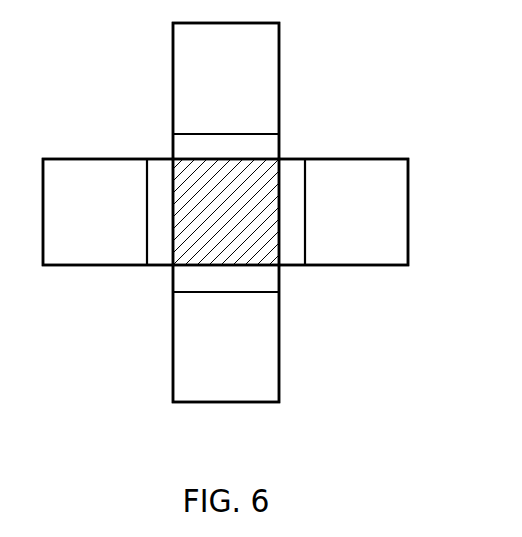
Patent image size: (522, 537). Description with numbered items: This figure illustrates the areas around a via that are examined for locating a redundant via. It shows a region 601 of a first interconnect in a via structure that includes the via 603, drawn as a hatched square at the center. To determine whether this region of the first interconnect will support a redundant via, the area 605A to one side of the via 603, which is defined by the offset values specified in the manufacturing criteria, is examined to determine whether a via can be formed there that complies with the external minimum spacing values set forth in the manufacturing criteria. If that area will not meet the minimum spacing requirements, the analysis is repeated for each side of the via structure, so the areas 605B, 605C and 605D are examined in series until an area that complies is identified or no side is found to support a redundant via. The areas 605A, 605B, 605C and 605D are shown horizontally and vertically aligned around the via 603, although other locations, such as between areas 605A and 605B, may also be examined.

The region of a first interconnect 601 is at (147, 112).
The via 603 is at (208, 222).
The area 605A is at (200, 90).
The area 605B is at (383, 222).
The area 605C is at (251, 354).
The area 605D is at (120, 222).